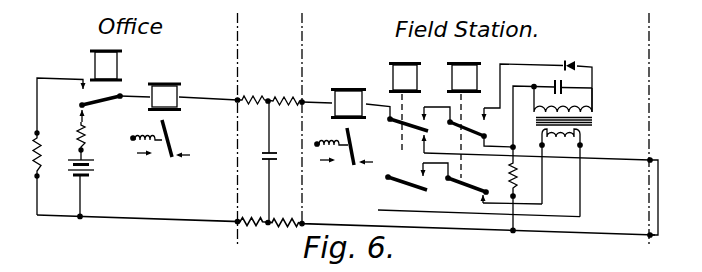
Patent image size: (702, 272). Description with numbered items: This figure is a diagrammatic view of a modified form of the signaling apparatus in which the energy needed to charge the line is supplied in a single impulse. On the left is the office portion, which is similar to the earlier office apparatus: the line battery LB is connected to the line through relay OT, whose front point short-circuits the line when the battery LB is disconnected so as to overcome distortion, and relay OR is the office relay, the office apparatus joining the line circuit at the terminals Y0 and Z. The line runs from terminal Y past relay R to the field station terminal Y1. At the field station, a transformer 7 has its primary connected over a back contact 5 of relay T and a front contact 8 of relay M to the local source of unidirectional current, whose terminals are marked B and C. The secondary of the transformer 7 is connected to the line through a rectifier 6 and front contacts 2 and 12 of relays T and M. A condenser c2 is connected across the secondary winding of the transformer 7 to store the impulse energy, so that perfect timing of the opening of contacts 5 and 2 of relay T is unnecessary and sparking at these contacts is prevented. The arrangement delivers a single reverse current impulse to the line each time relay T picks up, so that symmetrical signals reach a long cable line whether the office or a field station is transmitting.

The relay OT is at (101, 78).
The relay OR is at (160, 112).
The battery LB is at (84, 178).
The relay R is at (344, 119).
The relay M is at (405, 68).
The relay T is at (464, 68).
The front contact of relay M 12 is at (407, 124).
The front contact of relay T 2 is at (467, 124).
The front contact of relay M 8 is at (406, 185).
The back contact of relay T 5 is at (472, 187).
The rectifier 6 is at (565, 61).
The transformer 7 is at (592, 124).
The condenser c2 is at (563, 91).
The line circuit terminal Y0 is at (237, 100).
The line terminal Y is at (302, 101).
The line terminal Y1 is at (650, 160).
The line circuit terminal Z is at (237, 222).
The battery terminal B is at (384, 177).
The battery terminal C is at (468, 210).